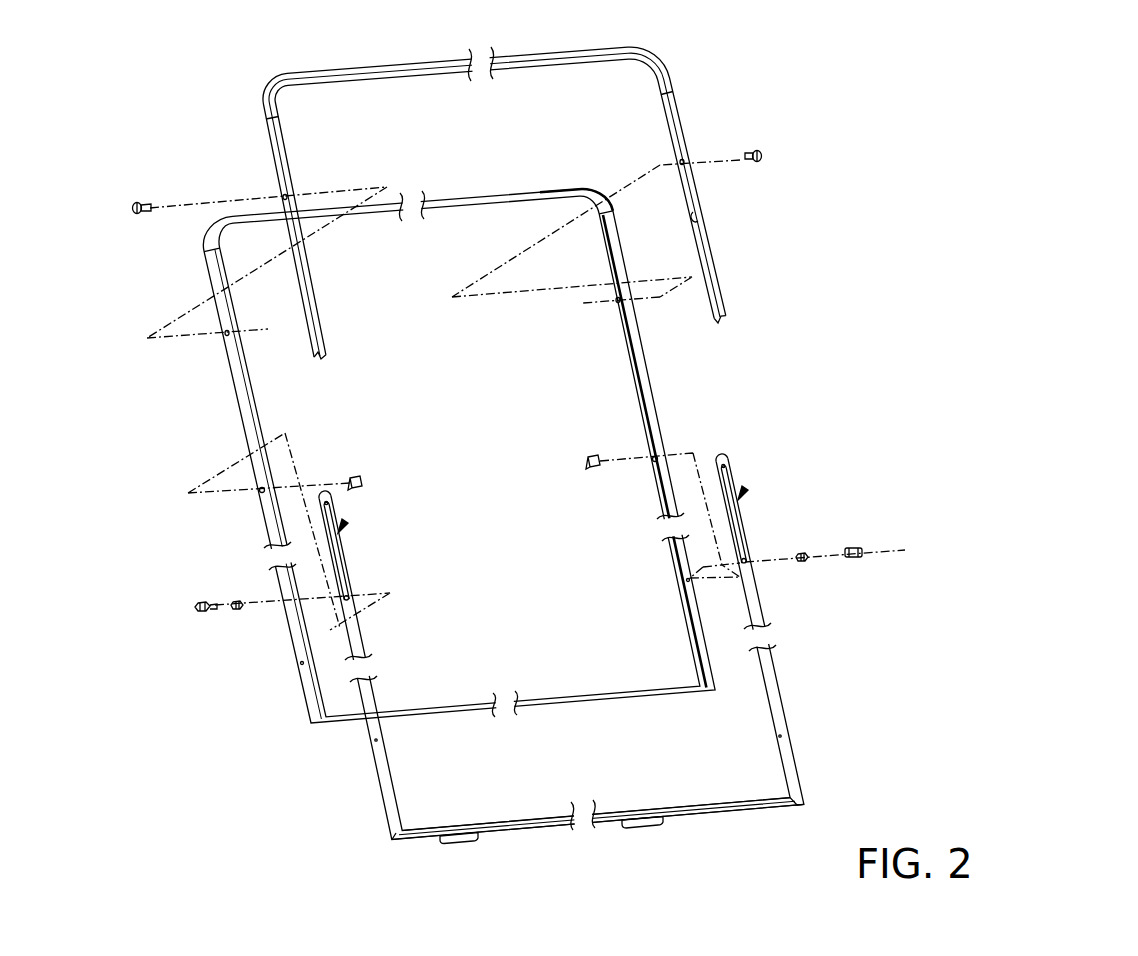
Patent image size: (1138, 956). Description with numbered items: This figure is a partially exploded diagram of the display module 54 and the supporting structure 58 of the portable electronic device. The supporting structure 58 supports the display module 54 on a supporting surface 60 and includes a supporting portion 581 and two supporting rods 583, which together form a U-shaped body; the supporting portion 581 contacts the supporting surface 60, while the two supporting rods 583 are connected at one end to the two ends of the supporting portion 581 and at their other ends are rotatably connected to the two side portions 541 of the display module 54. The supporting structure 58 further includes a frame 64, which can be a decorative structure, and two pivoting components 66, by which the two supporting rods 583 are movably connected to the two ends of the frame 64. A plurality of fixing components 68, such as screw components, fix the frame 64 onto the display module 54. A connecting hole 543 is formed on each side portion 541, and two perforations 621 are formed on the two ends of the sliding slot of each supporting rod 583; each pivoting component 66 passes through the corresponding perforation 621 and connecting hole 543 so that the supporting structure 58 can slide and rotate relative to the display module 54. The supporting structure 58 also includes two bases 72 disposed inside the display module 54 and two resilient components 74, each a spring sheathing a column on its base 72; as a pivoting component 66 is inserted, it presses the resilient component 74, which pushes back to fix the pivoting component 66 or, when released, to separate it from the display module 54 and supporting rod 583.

The display module 54 is at (434, 478).
The side portion 541 is at (240, 392).
The connecting hole 543 is at (258, 494).
The supporting structure 58 is at (672, 457).
The supporting portion 581 is at (556, 838).
The supporting rod 583 is at (385, 770).
The supporting surface 60 is at (346, 521).
The perforation 621 is at (348, 597).
The frame 64 is at (346, 70).
The pivoting component 66 is at (200, 612).
The fixing component 68 is at (138, 202).
The base 72 is at (357, 478).
The resilient component 74 is at (237, 610).